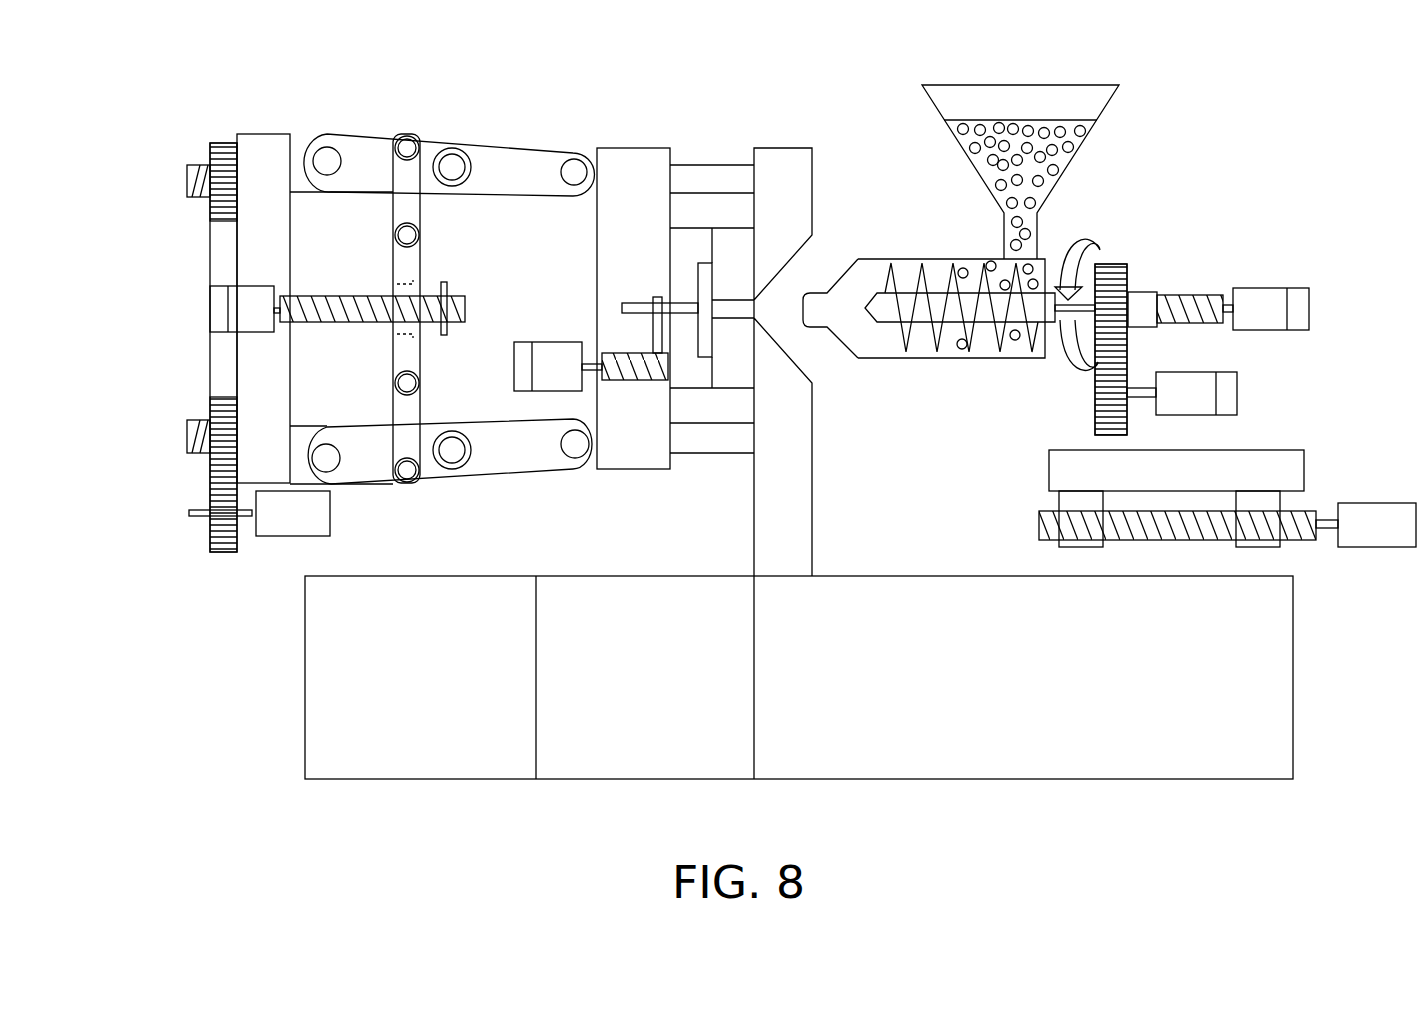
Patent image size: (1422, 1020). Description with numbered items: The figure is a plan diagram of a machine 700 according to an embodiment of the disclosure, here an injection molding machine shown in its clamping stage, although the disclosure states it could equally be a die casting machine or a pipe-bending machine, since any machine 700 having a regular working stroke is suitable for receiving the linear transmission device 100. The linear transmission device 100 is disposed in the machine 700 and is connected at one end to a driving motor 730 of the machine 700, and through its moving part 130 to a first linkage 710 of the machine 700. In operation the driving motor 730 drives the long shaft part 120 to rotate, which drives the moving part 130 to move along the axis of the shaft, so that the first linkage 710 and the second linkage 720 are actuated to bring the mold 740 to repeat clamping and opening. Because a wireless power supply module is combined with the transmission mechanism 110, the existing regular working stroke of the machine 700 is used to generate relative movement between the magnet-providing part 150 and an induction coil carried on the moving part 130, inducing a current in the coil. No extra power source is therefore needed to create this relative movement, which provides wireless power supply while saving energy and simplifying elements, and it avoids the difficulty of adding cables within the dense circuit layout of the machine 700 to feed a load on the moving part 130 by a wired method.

The machine 700 is at (131, 52).
The linear transmission device 100 is at (323, 283).
The transmission mechanism 110 is at (117, 342).
The long shaft part 120 is at (343, 322).
The moving part 130 is at (415, 332).
The magnet-providing part 150 is at (447, 282).
The first linkage 710 is at (420, 262).
The second linkage 720 is at (505, 168).
The driving motor 730 is at (237, 310).
The mold 740 is at (692, 243).